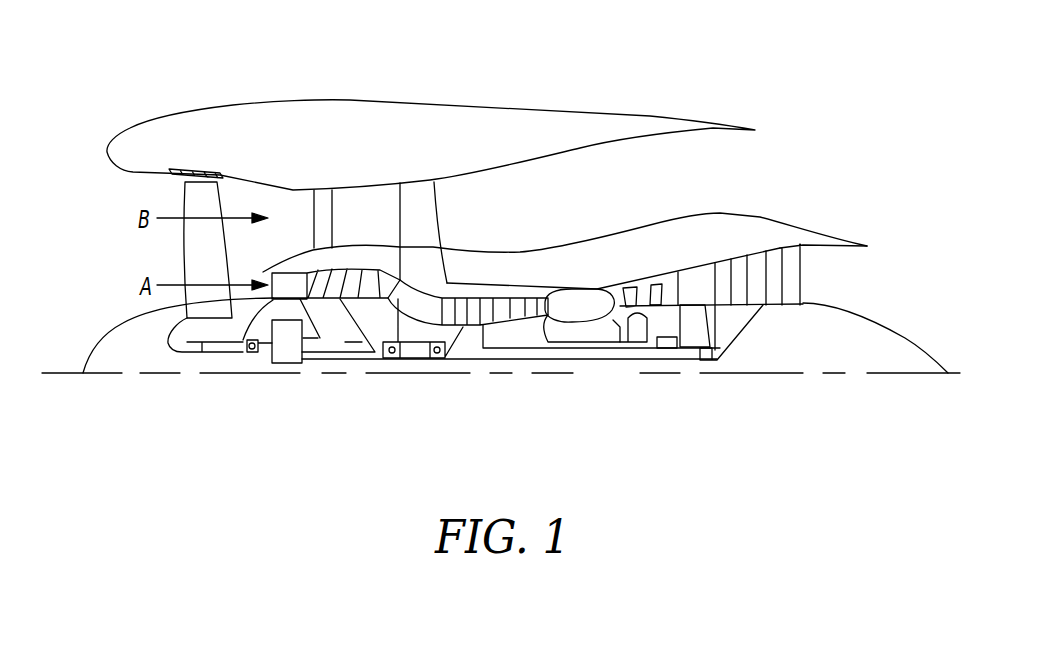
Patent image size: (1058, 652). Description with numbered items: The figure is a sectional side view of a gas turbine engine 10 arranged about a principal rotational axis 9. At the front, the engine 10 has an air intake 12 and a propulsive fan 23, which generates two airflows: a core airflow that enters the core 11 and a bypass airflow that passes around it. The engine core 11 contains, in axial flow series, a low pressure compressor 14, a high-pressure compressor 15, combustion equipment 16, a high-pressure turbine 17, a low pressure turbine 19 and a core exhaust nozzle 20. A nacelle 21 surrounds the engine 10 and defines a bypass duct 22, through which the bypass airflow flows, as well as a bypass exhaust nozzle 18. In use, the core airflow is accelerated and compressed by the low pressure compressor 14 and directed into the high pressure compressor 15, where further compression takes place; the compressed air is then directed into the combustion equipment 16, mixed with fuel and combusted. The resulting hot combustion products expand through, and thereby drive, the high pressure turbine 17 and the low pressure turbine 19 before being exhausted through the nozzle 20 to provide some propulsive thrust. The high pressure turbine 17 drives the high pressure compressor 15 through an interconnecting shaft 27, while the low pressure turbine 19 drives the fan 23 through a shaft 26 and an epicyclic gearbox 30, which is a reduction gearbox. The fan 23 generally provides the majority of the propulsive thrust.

The principal rotational axis 9 is at (809, 376).
The gas turbine engine 10 is at (178, 116).
The core 11 is at (547, 268).
The air intake 12 is at (126, 199).
The low pressure compressor 14 is at (353, 280).
The high-pressure compressor 15 is at (498, 312).
The combustion equipment 16 is at (577, 312).
The high-pressure turbine 17 is at (641, 295).
The bypass exhaust nozzle 18 is at (752, 168).
The low pressure turbine 19 is at (775, 262).
The core exhaust nozzle 20 is at (830, 277).
The nacelle 21 is at (413, 108).
The bypass duct 22 is at (701, 185).
The propulsive fan 23 is at (190, 250).
The shaft 26 is at (494, 361).
The interconnecting shaft 27 is at (532, 349).
The epicyclic gearbox 30 is at (285, 355).